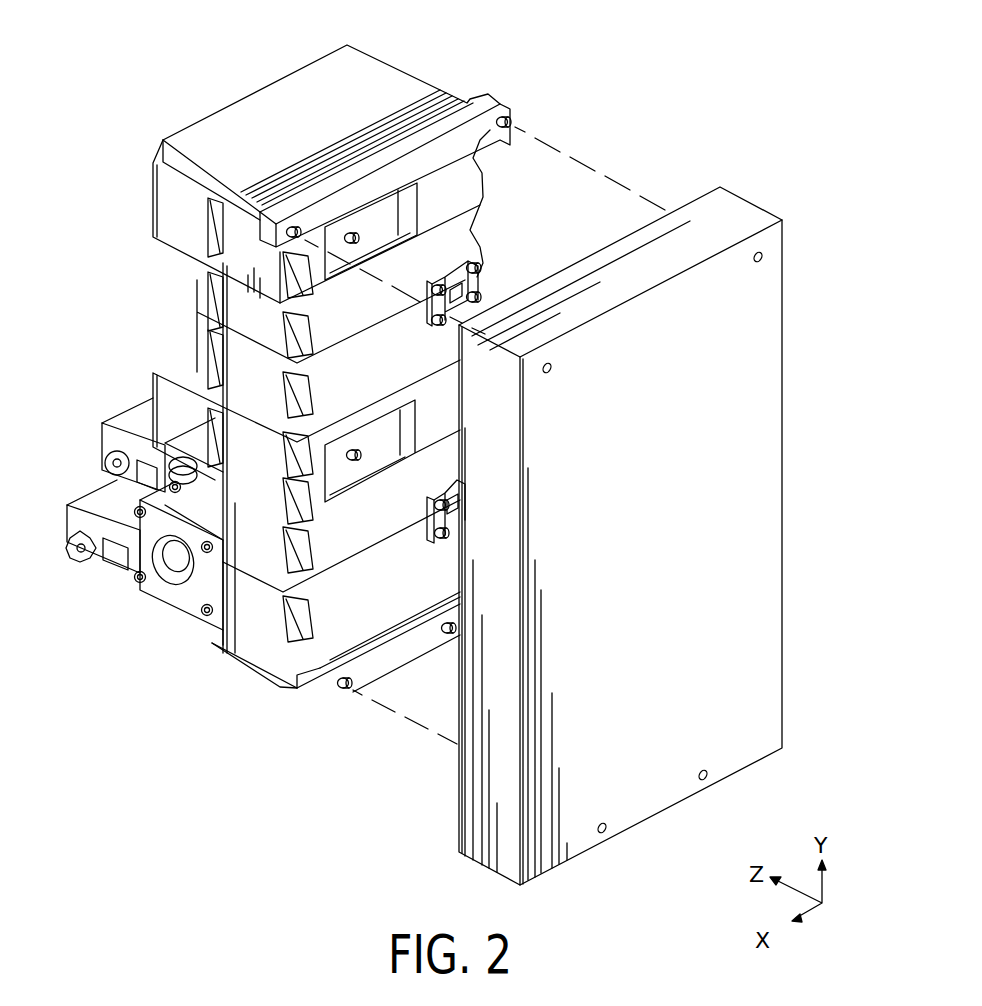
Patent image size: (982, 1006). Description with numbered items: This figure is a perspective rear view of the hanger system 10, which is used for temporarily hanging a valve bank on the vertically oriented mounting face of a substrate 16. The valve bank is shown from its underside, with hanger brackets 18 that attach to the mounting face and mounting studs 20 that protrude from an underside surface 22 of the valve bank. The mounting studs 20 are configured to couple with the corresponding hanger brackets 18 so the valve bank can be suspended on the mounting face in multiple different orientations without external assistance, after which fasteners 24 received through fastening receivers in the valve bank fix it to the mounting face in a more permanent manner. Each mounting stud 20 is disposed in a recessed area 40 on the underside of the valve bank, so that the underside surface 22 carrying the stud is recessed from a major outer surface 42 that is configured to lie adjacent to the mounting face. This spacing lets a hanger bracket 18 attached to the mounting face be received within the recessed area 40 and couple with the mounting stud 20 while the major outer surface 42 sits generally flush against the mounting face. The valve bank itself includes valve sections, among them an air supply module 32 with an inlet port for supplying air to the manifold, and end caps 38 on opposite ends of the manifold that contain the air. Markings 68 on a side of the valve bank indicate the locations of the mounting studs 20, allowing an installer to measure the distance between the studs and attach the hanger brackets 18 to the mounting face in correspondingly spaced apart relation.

The hanger system 10 is at (120, 66).
The substrate 16 is at (730, 222).
The hanger bracket 18 is at (493, 278).
The mounting stud 20 is at (383, 217).
The underside surface 22 is at (352, 232).
The fastener 24 is at (505, 116).
The air supply module 32 is at (150, 179).
The end cap 38 is at (393, 82).
The recessed area 40 is at (408, 438).
The major outer surface 42 is at (460, 171).
The markings 68 is at (282, 254).